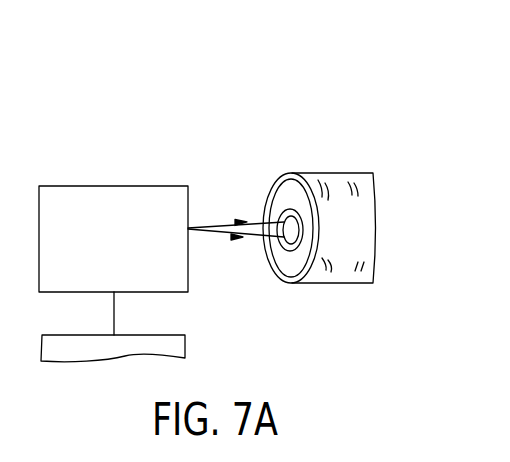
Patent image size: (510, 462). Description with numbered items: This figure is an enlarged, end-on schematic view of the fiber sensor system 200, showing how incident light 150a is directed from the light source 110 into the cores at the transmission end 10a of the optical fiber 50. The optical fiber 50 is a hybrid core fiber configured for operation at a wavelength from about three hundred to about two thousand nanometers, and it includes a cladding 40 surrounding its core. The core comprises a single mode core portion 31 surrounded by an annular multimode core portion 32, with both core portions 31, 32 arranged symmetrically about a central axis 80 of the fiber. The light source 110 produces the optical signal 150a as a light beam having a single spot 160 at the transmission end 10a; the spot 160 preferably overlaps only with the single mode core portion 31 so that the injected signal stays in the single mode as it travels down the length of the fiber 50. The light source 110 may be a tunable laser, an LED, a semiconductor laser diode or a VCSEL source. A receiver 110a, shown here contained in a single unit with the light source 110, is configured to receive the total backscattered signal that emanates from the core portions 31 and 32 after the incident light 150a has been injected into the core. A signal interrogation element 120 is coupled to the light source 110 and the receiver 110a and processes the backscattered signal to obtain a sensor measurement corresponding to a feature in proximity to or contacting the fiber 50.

The fiber sensor system 200 is at (292, 86).
The light source 110 is at (116, 206).
The receiver 110a is at (143, 186).
The signal interrogation element 120 is at (190, 350).
The incident light 150a is at (215, 224).
The transmission end 10a is at (286, 195).
The spot 160 is at (282, 235).
The optical fiber 50 is at (369, 166).
The cladding 40 is at (288, 252).
The central axis 80 is at (287, 240).
The single mode core portion 31 is at (290, 245).
The multimode core portion 32 is at (297, 241).